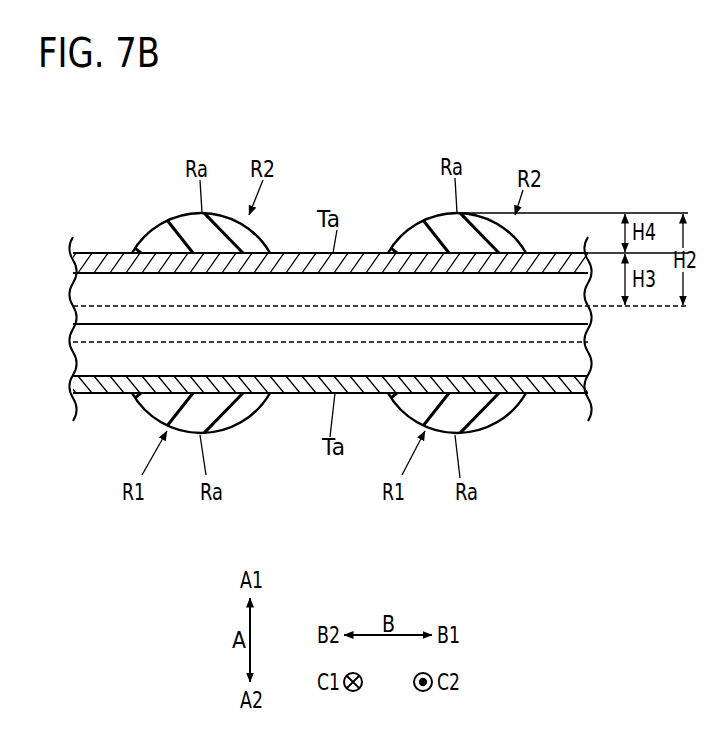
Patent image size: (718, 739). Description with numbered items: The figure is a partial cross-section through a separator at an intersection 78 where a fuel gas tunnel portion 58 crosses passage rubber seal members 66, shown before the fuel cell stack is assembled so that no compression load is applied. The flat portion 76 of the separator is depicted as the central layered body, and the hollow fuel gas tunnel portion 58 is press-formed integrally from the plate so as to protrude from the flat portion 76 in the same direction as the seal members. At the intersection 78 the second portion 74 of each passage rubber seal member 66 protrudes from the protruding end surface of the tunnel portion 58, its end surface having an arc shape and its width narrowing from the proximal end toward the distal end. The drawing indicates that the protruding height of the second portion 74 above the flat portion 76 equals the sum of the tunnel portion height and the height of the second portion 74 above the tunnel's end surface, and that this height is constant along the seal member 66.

The fuel gas tunnel portion 58 is at (564, 253).
The passage rubber seal member 66 is at (157, 242).
The second portion 74 is at (180, 221).
The flat portion 76 is at (398, 306).
The intersection 78 is at (505, 155).